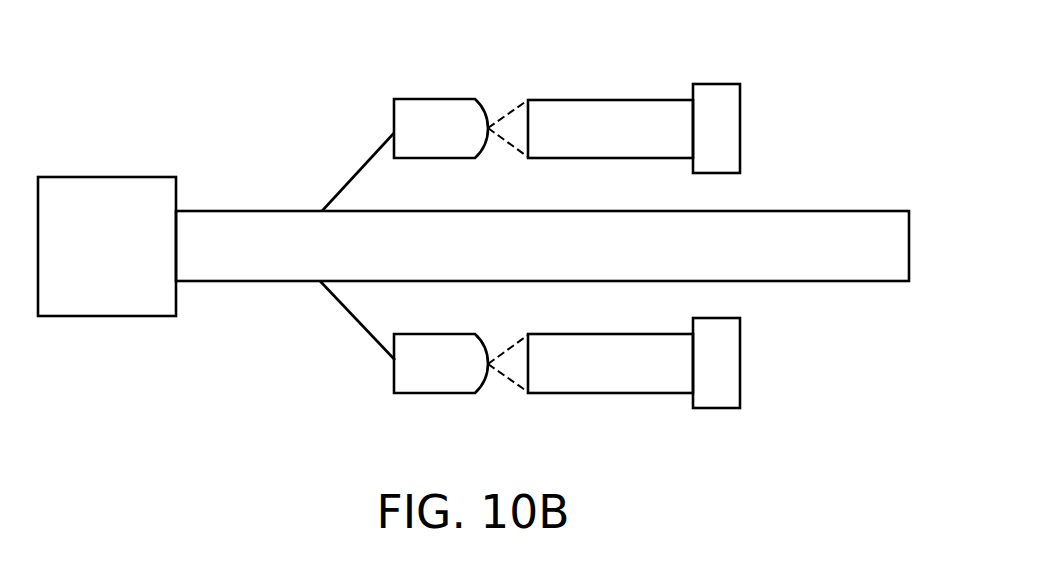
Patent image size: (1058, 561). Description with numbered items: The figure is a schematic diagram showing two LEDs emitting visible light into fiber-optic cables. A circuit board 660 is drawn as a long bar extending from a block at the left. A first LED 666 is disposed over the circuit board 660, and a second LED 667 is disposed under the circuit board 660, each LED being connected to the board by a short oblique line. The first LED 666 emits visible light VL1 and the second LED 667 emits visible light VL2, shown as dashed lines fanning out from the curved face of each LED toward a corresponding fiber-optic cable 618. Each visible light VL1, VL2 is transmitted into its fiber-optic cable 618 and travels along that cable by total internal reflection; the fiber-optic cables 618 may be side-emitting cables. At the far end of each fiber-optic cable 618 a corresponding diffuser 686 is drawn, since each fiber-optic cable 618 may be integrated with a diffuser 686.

The circuit board 660 is at (563, 262).
The first LED 666 is at (435, 98).
The second LED 667 is at (433, 394).
The visible light VL1 is at (510, 111).
The visible light VL2 is at (508, 379).
The fiber-optic cable 618 is at (615, 98).
The diffuser 686 is at (717, 84).